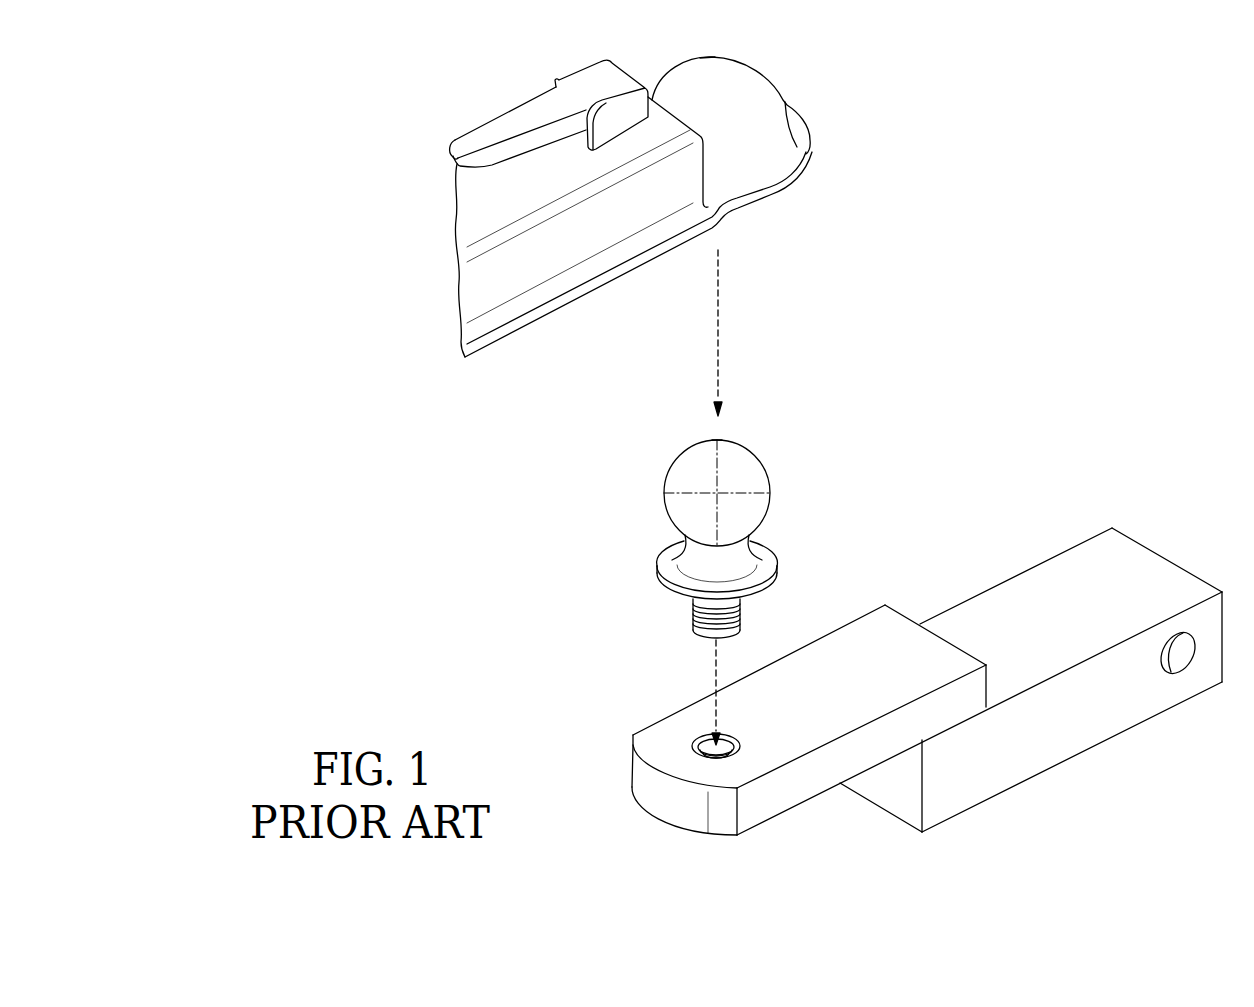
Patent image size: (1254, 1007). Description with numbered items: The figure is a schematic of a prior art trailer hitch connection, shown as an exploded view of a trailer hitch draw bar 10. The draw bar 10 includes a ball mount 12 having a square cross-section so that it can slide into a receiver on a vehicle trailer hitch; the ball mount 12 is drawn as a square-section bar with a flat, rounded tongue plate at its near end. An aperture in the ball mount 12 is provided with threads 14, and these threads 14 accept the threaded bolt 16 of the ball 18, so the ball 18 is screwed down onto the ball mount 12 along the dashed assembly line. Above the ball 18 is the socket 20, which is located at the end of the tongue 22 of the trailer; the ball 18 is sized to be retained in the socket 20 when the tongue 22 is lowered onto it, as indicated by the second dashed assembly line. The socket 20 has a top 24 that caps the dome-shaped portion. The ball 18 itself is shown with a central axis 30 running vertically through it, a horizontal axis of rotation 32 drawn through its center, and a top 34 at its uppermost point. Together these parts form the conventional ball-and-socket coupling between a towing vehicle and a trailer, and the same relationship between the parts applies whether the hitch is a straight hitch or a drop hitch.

The trailer hitch draw bar 10 is at (1128, 200).
The ball mount 12 is at (812, 783).
The threads 14 is at (693, 745).
The threaded bolt 16 is at (741, 611).
The ball 18 is at (760, 464).
The socket 20 is at (764, 72).
The tongue 22 is at (607, 230).
The top 24 is at (722, 57).
The central axis 30 is at (715, 462).
The horizontal axis of rotation 32 is at (680, 493).
The top 34 is at (718, 440).